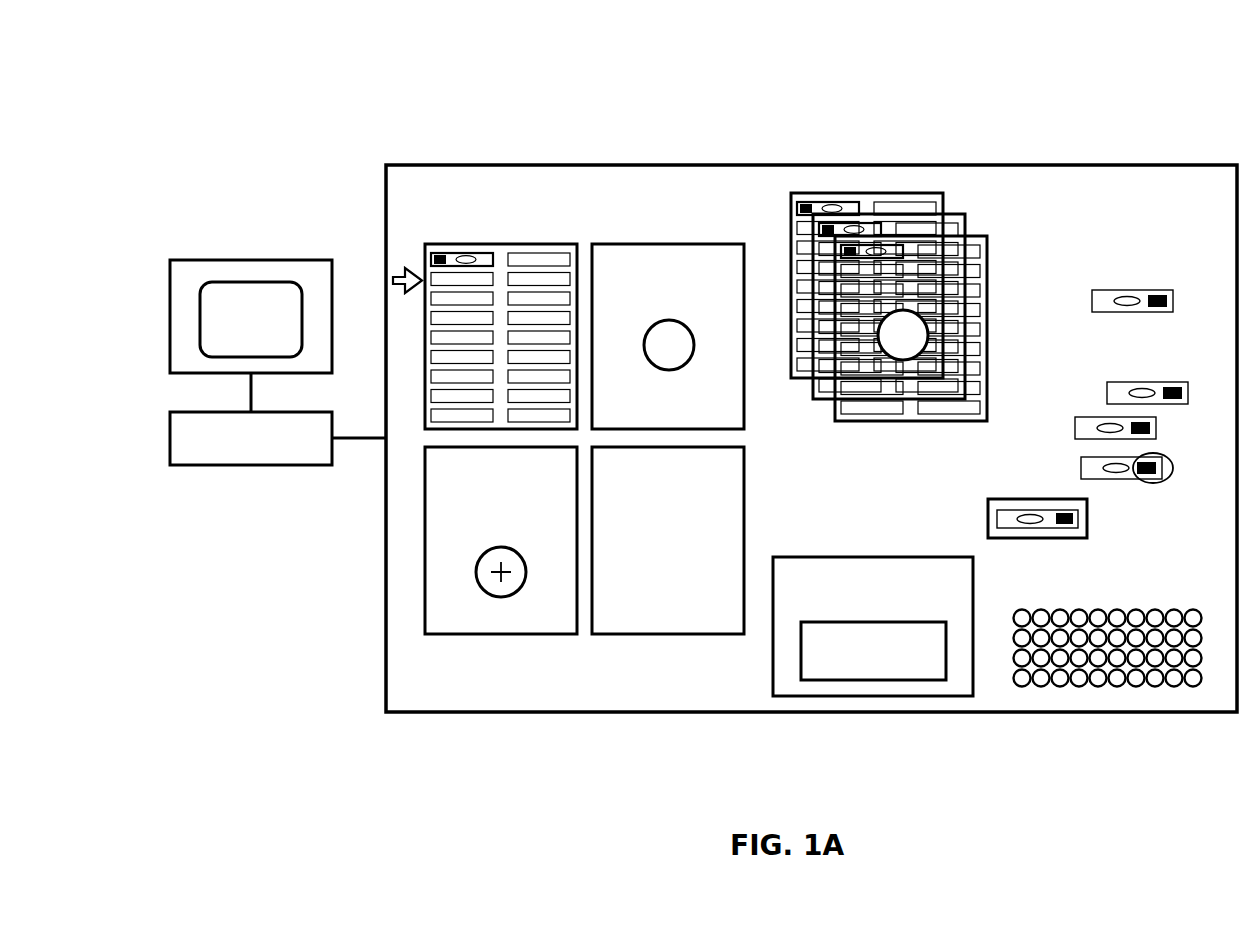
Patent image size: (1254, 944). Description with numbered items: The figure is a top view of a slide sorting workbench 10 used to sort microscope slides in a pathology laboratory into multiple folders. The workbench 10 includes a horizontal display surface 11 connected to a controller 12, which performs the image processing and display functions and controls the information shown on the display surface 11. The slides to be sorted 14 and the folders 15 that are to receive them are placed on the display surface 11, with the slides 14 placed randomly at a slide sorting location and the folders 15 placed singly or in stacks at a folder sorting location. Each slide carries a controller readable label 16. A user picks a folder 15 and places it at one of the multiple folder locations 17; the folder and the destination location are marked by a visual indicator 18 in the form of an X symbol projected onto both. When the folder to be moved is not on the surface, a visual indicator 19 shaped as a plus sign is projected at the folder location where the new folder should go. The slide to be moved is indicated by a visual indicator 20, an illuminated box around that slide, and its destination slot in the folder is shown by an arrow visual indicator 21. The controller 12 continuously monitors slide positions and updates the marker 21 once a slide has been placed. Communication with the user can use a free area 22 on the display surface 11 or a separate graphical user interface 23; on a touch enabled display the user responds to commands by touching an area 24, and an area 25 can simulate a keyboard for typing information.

The workbench 10 is at (300, 88).
The horizontal display surface 11 is at (1123, 185).
The controller 12 is at (250, 468).
The slides to be sorted 14 is at (1135, 285).
The folders 15 is at (497, 268).
The controller readable label 16 is at (1166, 482).
The folder locations 17 is at (580, 340).
The visual indicator 18 is at (882, 325).
The visual indicator 19 is at (472, 573).
The visual indicator 20 is at (988, 518).
The visual indicator 21 is at (392, 277).
The free area 22 is at (840, 673).
The graphical user interface 23 is at (249, 258).
The area associated with the command 24 is at (872, 682).
The area simulating a keyboard 25 is at (1112, 690).